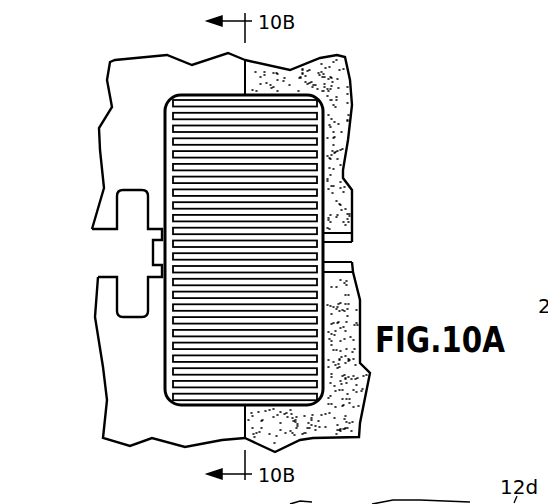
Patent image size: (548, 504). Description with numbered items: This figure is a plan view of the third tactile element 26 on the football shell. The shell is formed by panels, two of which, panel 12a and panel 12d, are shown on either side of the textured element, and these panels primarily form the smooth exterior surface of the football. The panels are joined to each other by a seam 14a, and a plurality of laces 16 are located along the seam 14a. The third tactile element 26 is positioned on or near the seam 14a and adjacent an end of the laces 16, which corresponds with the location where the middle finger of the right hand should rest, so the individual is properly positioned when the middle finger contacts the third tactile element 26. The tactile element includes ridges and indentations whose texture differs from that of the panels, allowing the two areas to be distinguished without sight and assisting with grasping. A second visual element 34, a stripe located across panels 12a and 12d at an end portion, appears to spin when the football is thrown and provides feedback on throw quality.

The panel 12a is at (109, 150).
The panel 12d is at (109, 400).
The laces 16 is at (103, 252).
The third tactile element 26 is at (325, 177).
The second visual element 34 is at (352, 105).
The seam 14a is at (340, 250).